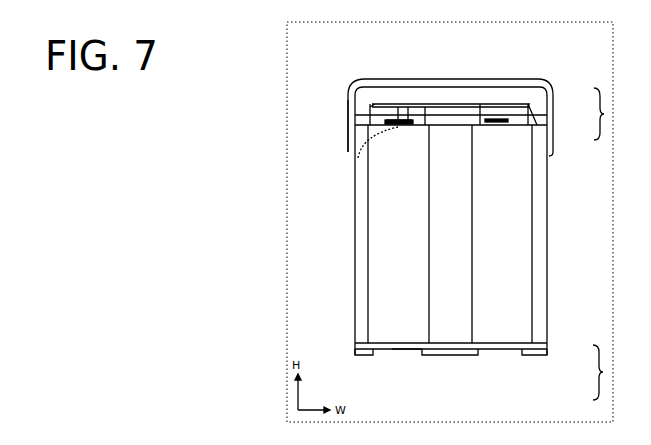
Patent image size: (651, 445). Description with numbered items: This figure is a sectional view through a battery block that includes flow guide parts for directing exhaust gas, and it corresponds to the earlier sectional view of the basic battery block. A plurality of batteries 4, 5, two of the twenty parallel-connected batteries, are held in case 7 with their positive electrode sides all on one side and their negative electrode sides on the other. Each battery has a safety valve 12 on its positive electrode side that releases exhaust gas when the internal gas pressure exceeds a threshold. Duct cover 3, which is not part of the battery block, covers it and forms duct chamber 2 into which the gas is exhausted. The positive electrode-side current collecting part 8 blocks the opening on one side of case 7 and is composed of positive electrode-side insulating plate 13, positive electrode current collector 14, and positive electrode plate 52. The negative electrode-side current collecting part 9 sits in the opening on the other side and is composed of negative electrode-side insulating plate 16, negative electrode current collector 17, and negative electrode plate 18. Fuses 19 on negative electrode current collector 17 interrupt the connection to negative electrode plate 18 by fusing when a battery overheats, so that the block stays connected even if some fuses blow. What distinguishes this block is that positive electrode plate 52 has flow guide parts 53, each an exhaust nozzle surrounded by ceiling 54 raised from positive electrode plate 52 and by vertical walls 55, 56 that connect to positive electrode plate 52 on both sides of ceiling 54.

The duct chamber 2 is at (357, 95).
The duct cover 3 is at (348, 108).
The battery 4 is at (378, 294).
The battery 5 is at (527, 305).
The case 7 is at (355, 218).
The positive electrode-side current collecting part 8 is at (604, 114).
The negative electrode-side current collecting part 9 is at (603, 372).
The safety valve 12 is at (360, 157).
The positive electrode-side insulating plate 13 is at (548, 125).
The positive electrode current collector 14 is at (547, 101).
The negative electrode-side insulating plate 16 is at (547, 348).
The negative electrode current collector 17 is at (520, 358).
The negative electrode plate 18 is at (537, 355).
The fuse 19 is at (392, 349).
The positive electrode plate 52 is at (550, 115).
The flow guide part 53 is at (503, 104).
The ceiling 54 is at (400, 104).
The vertical wall 55 is at (383, 104).
The vertical wall 56 is at (412, 104).